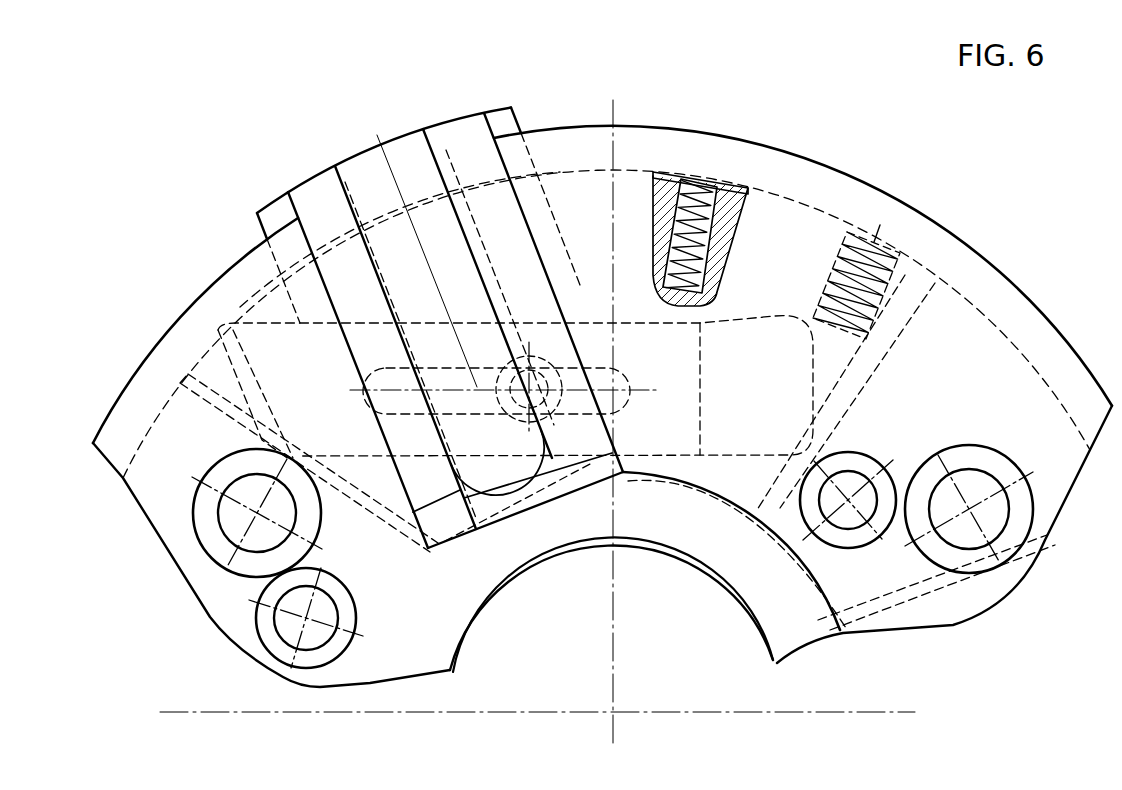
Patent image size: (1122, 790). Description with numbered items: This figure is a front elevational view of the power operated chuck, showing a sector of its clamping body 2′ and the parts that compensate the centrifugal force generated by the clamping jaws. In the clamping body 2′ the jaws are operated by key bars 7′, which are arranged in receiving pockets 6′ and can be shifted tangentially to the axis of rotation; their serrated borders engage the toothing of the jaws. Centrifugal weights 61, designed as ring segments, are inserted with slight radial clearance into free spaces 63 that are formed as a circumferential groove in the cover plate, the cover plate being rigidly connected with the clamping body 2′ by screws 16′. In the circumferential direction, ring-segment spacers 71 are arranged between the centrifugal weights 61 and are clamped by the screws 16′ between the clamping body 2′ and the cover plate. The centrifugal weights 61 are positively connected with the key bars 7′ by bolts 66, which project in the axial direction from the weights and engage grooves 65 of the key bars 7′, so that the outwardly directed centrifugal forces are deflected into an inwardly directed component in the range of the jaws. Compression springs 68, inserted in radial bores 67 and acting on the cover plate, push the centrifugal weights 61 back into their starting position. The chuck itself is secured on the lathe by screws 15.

The clamping body 2′ is at (836, 168).
The receiving pockets 6′ is at (716, 323).
The key bars 7′ is at (657, 355).
The screws 15 is at (993, 517).
The screws 16′ is at (850, 517).
The centrifugal weights 61 is at (907, 277).
The free spaces 63 is at (797, 203).
The grooves 65 is at (446, 376).
The bolts 66 is at (546, 382).
The radial bores 67 is at (698, 176).
The compression springs 68 is at (710, 180).
The spacers 71 is at (993, 358).